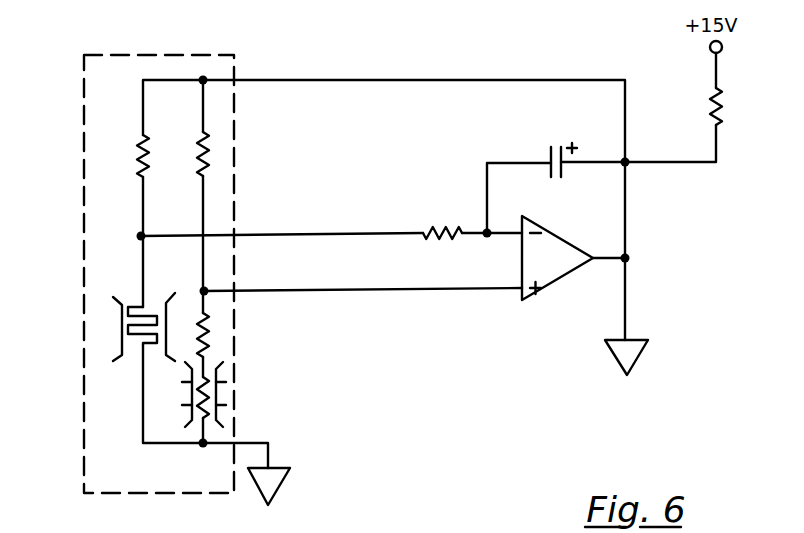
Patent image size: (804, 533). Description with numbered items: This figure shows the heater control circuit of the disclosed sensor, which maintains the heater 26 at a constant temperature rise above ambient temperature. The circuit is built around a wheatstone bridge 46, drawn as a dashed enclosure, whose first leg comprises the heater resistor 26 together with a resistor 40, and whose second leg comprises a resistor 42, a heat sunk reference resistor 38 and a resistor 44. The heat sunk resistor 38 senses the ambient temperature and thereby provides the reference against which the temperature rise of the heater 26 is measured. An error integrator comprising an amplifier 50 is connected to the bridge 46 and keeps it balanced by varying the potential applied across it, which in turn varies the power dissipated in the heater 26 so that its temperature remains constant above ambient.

The heater 26 is at (122, 330).
The heat sunk reference resistor 38 is at (215, 397).
The resistor 40 is at (156, 151).
The resistor 42 is at (211, 157).
The resistor 44 is at (213, 333).
The wheatstone bridge 46 is at (155, 53).
The amplifier 50 is at (557, 245).